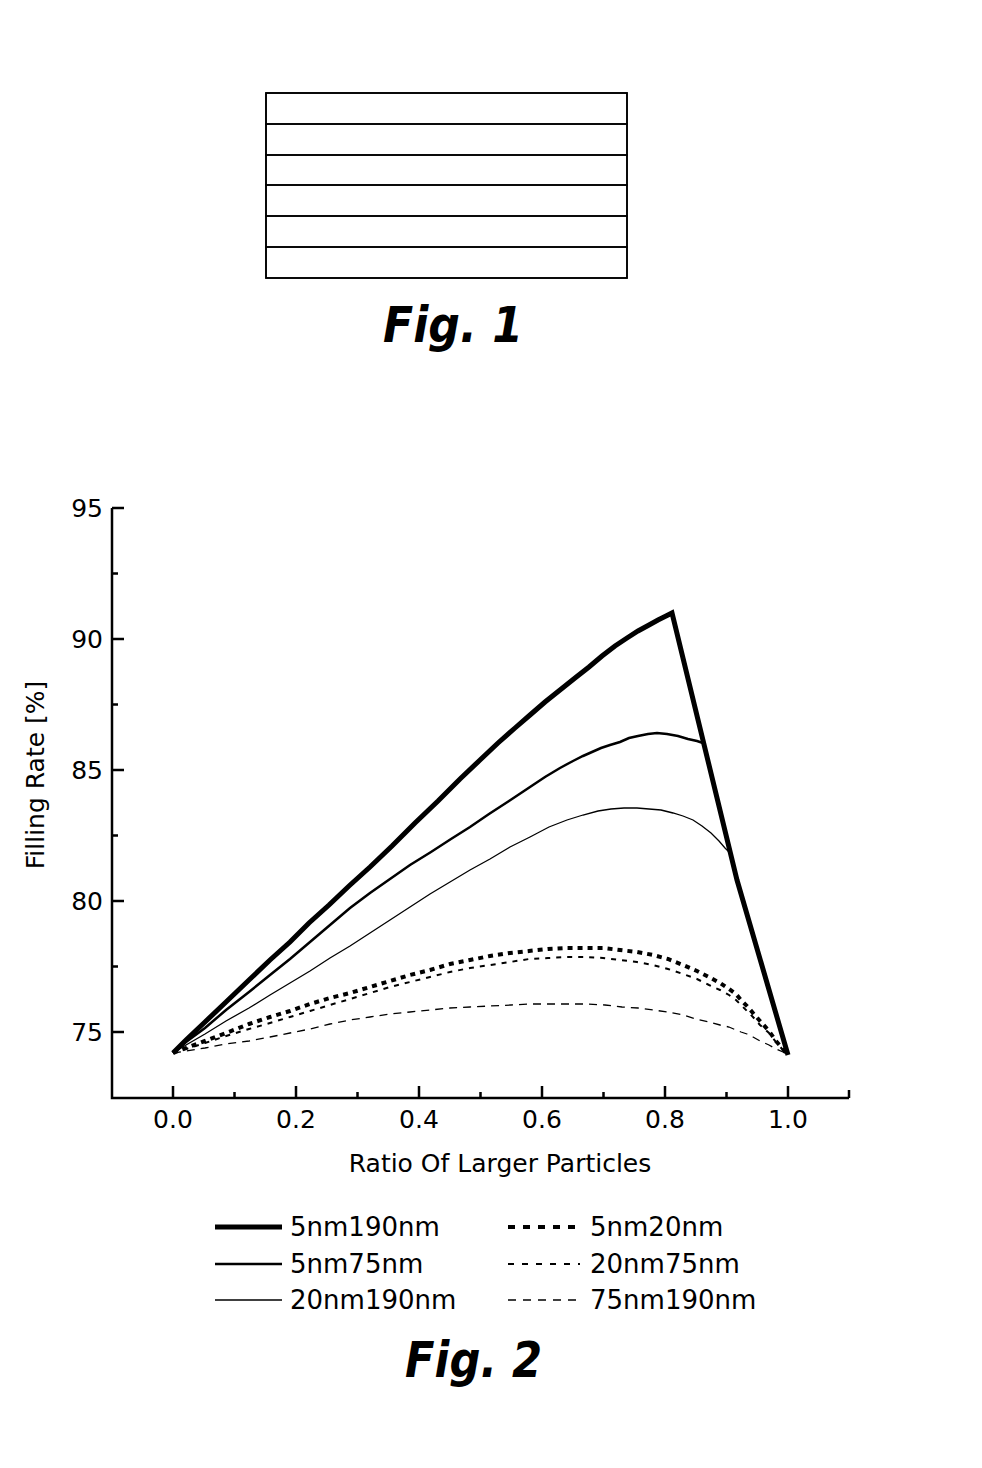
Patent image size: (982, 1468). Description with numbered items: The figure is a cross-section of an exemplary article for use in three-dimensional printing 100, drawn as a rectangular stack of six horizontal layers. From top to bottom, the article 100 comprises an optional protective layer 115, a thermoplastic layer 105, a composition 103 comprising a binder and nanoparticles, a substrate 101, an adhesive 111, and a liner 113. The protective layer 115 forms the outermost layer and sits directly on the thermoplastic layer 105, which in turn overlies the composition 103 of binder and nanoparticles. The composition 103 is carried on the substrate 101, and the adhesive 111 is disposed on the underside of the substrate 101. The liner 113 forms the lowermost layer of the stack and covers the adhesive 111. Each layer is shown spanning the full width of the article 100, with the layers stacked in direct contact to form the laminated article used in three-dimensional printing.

The article for use in 3-D printing 100 is at (627, 55).
The protective layer 115 is at (613, 110).
The thermoplastic layer 105 is at (277, 138).
The composition comprising binder and nanoparticles 103 is at (613, 173).
The substrate 101 is at (277, 201).
The adhesive 111 is at (613, 235).
The liner 113 is at (277, 263).